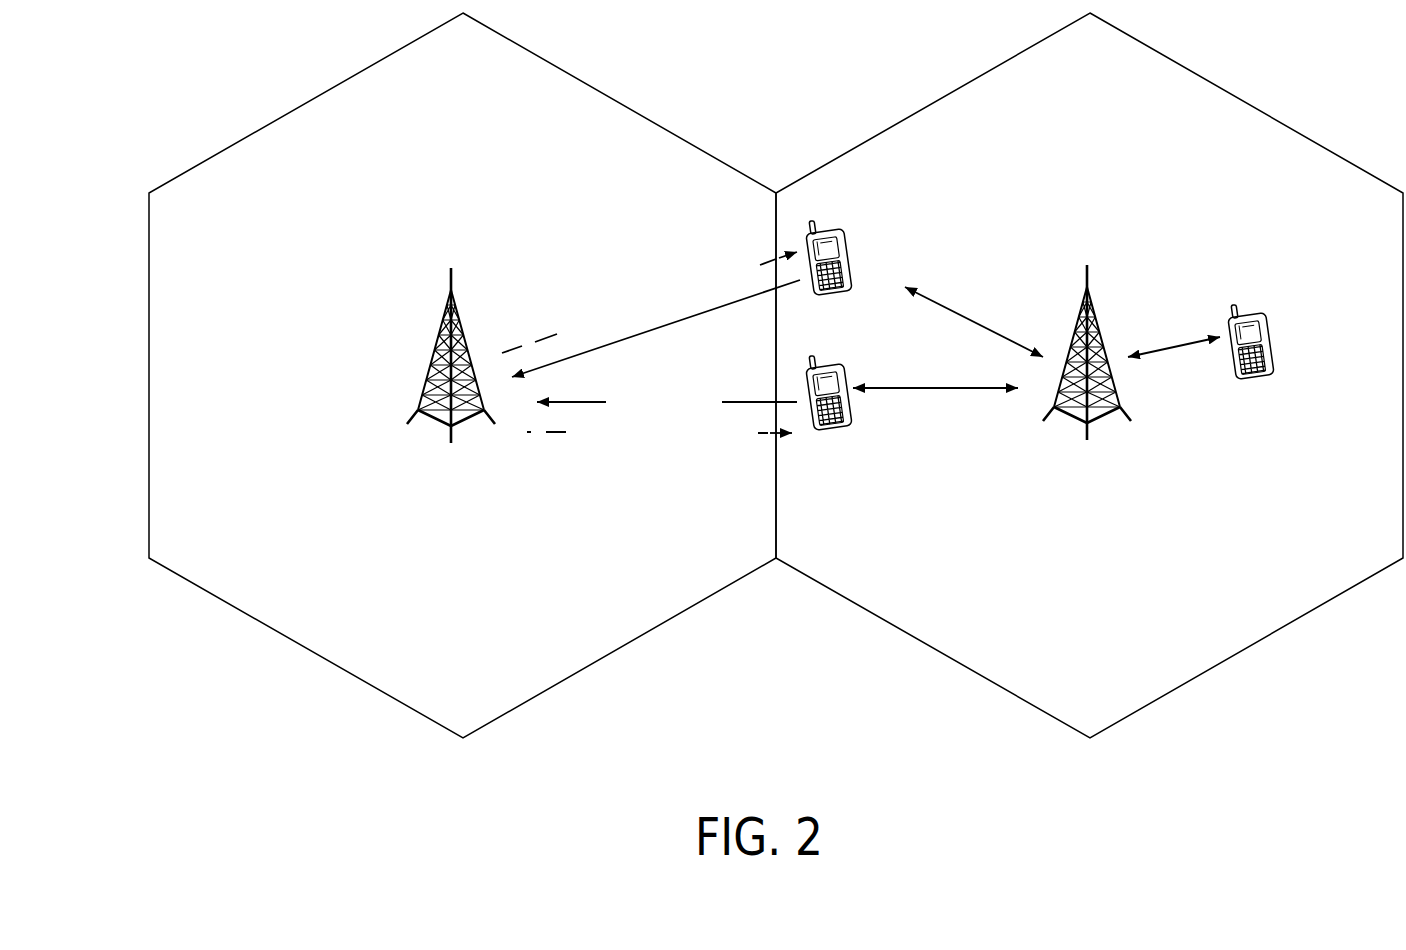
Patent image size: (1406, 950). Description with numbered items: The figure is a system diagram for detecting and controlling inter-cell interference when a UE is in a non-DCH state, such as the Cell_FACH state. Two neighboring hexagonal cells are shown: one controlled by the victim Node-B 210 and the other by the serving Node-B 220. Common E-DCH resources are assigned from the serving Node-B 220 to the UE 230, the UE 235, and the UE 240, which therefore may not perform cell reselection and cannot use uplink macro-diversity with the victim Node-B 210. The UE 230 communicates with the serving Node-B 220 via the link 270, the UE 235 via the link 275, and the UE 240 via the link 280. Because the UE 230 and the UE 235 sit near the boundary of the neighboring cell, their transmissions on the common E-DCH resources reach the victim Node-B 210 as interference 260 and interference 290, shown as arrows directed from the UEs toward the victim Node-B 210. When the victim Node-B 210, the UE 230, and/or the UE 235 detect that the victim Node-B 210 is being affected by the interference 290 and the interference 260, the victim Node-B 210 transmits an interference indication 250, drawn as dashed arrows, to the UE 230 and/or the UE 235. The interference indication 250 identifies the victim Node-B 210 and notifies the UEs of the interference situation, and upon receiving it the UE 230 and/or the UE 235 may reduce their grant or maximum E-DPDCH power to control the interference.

The victim Node-B 210 is at (452, 372).
The serving Node-B 220 is at (1086, 371).
The UE 230 is at (829, 274).
The UE 235 is at (829, 412).
The UE 240 is at (1252, 357).
The interference indication 250 is at (649, 346).
The interference 260 is at (656, 328).
The communication link 270 is at (974, 322).
The communication link 275 is at (935, 388).
The communication link 280 is at (1174, 345).
The interference 290 is at (667, 403).